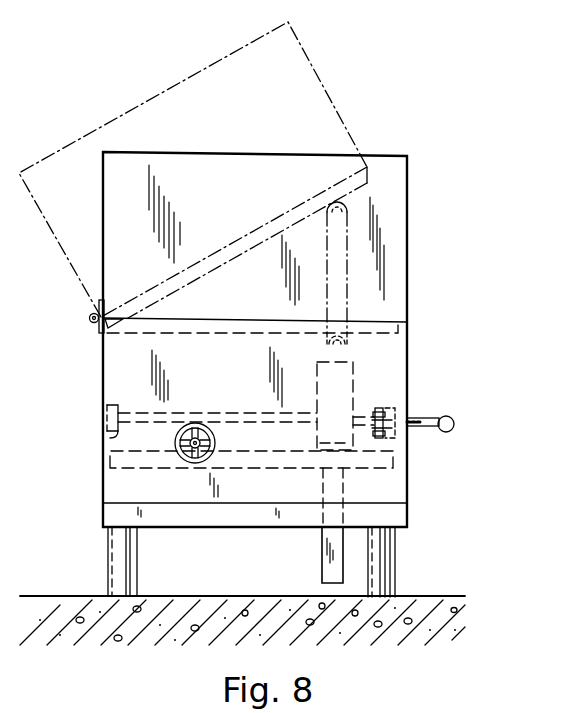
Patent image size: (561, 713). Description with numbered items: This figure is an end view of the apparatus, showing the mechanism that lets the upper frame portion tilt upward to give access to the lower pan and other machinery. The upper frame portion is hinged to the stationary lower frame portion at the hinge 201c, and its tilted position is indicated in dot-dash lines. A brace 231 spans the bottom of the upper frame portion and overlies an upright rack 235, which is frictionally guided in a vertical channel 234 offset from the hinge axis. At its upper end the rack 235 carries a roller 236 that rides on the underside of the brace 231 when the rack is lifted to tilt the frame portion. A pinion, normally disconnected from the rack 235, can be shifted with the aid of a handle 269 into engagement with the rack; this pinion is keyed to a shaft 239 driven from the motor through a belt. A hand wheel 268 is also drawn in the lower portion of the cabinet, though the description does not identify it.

The hinge 201c is at (90, 320).
The brace 231 is at (208, 334).
The roller 236 is at (326, 341).
The vertical channel 234 is at (354, 365).
The shaft 239 is at (112, 440).
The hand wheel valve 268 is at (186, 463).
The handle 269 is at (453, 431).
The rack 235 is at (322, 557).